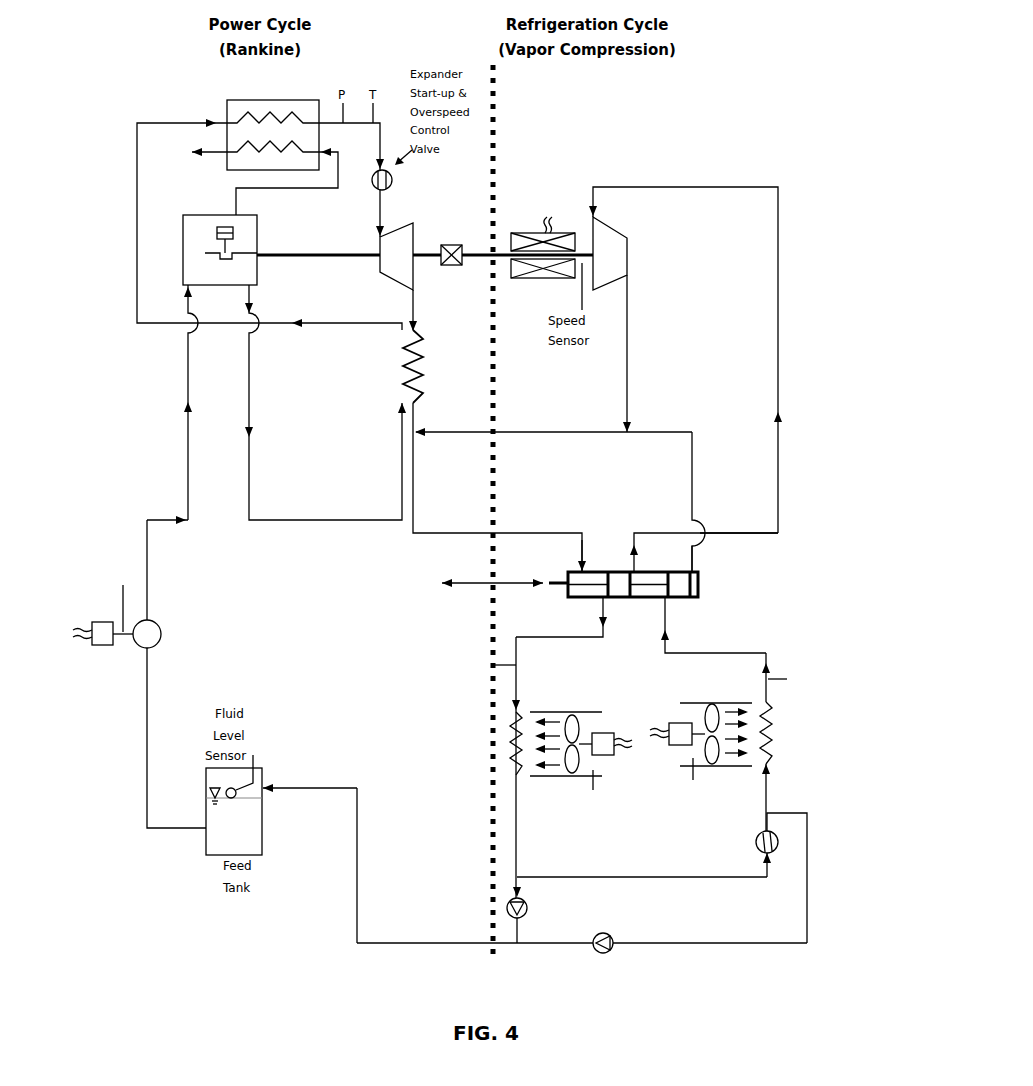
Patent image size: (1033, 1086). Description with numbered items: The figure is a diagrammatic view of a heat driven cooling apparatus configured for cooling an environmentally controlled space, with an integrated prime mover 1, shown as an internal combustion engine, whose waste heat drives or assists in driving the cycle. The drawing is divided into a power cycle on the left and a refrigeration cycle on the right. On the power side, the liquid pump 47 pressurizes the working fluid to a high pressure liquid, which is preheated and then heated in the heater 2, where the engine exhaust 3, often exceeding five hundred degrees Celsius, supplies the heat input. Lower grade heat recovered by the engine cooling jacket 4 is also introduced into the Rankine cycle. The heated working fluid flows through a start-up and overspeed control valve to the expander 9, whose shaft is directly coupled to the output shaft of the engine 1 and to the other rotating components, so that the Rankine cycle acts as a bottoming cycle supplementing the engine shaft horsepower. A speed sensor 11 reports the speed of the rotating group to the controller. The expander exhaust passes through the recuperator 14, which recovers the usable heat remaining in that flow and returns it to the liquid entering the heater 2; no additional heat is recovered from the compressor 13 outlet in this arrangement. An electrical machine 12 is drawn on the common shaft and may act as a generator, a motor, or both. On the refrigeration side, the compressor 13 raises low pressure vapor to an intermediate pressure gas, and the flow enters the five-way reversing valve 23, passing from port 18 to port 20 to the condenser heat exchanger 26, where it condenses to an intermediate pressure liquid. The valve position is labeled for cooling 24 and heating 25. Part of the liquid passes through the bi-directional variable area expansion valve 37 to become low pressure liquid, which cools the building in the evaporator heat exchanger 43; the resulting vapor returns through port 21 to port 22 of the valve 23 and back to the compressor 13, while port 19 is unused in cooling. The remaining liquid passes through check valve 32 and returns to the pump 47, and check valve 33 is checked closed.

The prime mover 1 is at (178, 267).
The heater 2 is at (273, 126).
The engine exhaust 3 is at (251, 181).
The engine cooling jacket 4 is at (157, 404).
The expander 9 is at (355, 273).
The speed sensor 11 is at (452, 282).
The electrical machine 12 is at (560, 220).
The compressor 13 is at (685, 360).
The recuperator 14 is at (489, 451).
The port 18 is at (574, 544).
The port 19 is at (705, 559).
The port 20 is at (574, 617).
The port 21 is at (713, 625).
The port 22 is at (739, 528).
The five-way reversing valve 23 is at (696, 584).
The cooling position 24 is at (529, 570).
The heating position 25 is at (447, 570).
The condenser heat exchanger 26 is at (508, 767).
The check valve 32 is at (472, 915).
The check valve 33 is at (600, 925).
The bi-directional variable area expansion valve 37 is at (662, 878).
The evaporator heat exchanger 43 is at (761, 742).
The liquid pump 47 is at (150, 674).